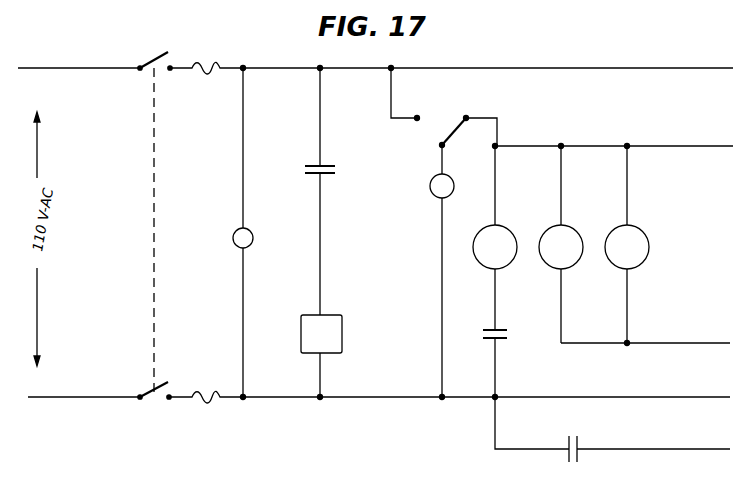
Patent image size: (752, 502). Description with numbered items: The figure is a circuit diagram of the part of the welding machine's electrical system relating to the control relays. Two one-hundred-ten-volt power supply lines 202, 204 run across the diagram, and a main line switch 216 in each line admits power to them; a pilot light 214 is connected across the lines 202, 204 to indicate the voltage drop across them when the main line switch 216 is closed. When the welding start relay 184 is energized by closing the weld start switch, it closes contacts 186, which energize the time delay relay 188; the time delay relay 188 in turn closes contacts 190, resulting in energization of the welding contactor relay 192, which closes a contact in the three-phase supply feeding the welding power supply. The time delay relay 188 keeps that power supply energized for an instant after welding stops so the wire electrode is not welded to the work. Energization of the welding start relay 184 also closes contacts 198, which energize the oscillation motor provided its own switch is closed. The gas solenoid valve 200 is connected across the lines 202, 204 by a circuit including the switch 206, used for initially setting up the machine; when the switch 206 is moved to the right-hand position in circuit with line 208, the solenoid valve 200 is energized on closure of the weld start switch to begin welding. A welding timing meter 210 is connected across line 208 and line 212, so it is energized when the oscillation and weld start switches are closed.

The welding start relay 184 is at (590, 217).
The contacts 186 is at (333, 168).
The time delay relay 188 is at (342, 332).
The contacts 190 is at (500, 329).
The welding contactor relay 192 is at (511, 230).
The contacts 198 is at (567, 453).
The gas solenoid valve 200 is at (432, 194).
The power supply line 202 is at (455, 68).
The power supply line 204 is at (381, 397).
The switch 206 is at (458, 124).
The line 208 is at (584, 146).
The welding timing meter 210 is at (649, 247).
The line 212 is at (603, 343).
The pilot light 214 is at (232, 247).
The main line switch 216 is at (155, 172).